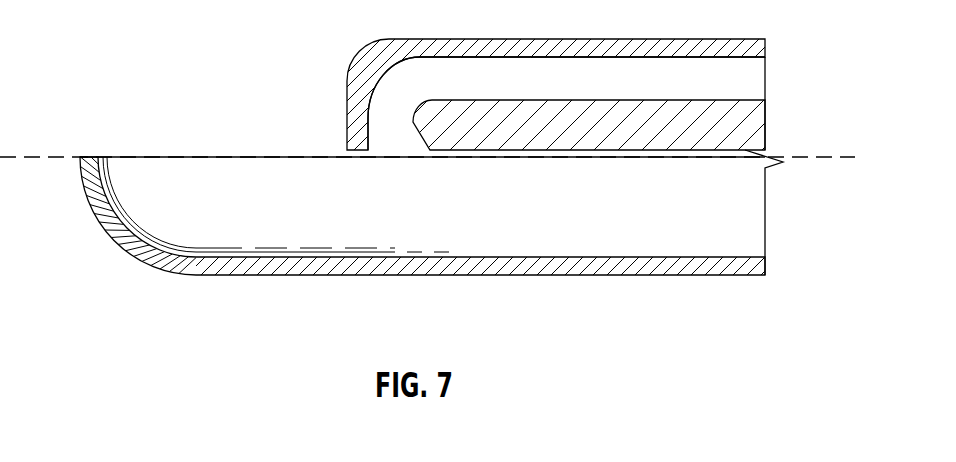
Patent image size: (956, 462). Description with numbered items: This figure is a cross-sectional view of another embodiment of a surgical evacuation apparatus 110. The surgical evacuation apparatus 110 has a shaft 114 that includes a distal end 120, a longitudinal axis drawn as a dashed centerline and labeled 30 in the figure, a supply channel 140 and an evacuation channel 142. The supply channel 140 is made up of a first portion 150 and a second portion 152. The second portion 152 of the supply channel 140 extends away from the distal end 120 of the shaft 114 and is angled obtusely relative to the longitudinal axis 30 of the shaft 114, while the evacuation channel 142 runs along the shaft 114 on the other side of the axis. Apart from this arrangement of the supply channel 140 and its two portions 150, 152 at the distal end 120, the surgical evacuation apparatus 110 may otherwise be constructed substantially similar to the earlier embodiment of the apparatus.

The surgical evacuation apparatus 110 is at (135, 38).
The central axis 30 is at (827, 158).
The distal end 120 is at (347, 98).
The second portion 152 is at (397, 63).
The first portion 150 is at (557, 60).
The supply channel 140 is at (663, 60).
The shaft 114 is at (618, 276).
The evacuation channel 142 is at (483, 258).